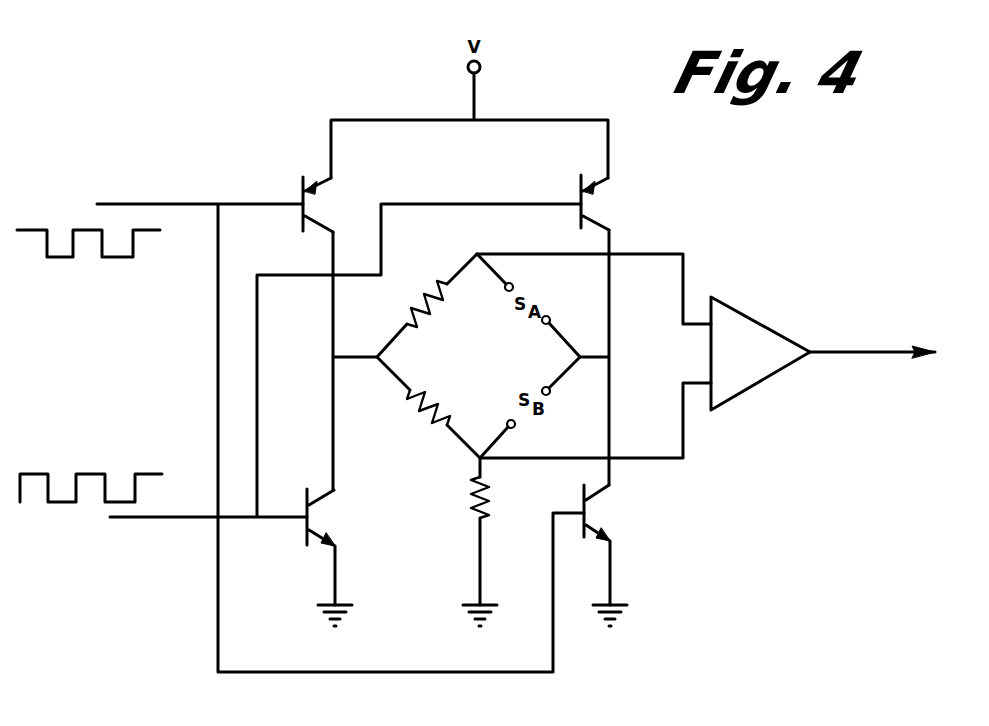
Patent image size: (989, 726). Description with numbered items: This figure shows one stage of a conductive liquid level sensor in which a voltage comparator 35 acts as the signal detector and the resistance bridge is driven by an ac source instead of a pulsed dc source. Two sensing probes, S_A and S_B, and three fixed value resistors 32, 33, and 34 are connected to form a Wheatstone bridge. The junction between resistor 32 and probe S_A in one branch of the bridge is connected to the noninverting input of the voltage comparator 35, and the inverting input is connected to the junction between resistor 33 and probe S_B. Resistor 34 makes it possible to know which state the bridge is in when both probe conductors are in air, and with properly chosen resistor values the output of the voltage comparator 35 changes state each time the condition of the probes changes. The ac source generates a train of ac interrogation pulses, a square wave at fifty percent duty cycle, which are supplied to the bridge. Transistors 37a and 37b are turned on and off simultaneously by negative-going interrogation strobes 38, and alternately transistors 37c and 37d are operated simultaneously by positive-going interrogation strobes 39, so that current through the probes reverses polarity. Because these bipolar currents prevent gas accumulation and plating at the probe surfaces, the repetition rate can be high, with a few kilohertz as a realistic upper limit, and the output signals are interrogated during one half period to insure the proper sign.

The fixed value resistor 32 is at (425, 292).
The fixed value resistor 33 is at (428, 412).
The fixed value resistor 34 is at (489, 497).
The voltage comparator 35 is at (770, 332).
The transistor 37a is at (299, 192).
The transistor 37b is at (590, 513).
The transistor 37c is at (605, 192).
The transistor 37d is at (312, 517).
The negative-going interrogation strobes 38 is at (60, 238).
The positive-going interrogation strobes 39 is at (62, 487).